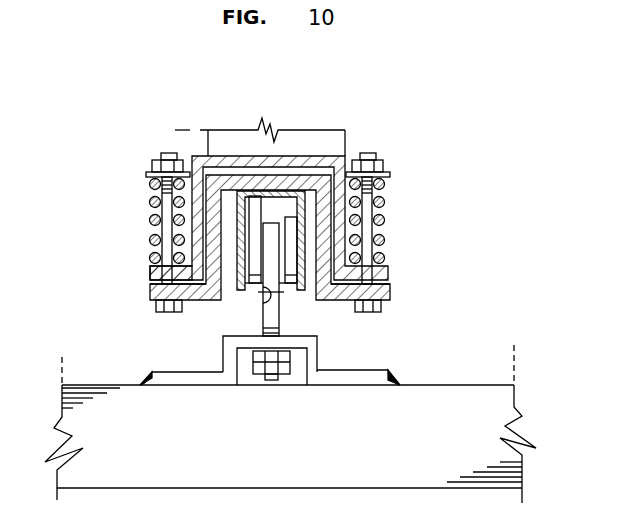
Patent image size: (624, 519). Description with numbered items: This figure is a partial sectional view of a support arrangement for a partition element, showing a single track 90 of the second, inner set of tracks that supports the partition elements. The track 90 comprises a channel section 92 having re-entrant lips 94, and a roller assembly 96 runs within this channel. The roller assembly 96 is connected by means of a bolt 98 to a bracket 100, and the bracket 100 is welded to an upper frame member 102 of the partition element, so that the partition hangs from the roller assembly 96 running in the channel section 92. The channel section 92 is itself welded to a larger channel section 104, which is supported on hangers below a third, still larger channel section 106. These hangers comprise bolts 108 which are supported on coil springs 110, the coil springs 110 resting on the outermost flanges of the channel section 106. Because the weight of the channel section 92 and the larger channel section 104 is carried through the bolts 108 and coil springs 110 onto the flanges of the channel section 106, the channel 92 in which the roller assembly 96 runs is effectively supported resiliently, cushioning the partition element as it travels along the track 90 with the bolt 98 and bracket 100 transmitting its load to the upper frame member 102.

The track 90 is at (408, 200).
The channel section 92 is at (305, 226).
The re-entrant lips 94 is at (262, 306).
The roller assembly 96 is at (252, 236).
The rod 98 is at (279, 320).
The bracket 100 is at (320, 350).
The upper frame member 102 is at (300, 446).
The larger channel section 104 is at (207, 300).
The third channel section 106 is at (150, 273).
The bolts 108 is at (170, 232).
The coil springs 110 is at (150, 202).